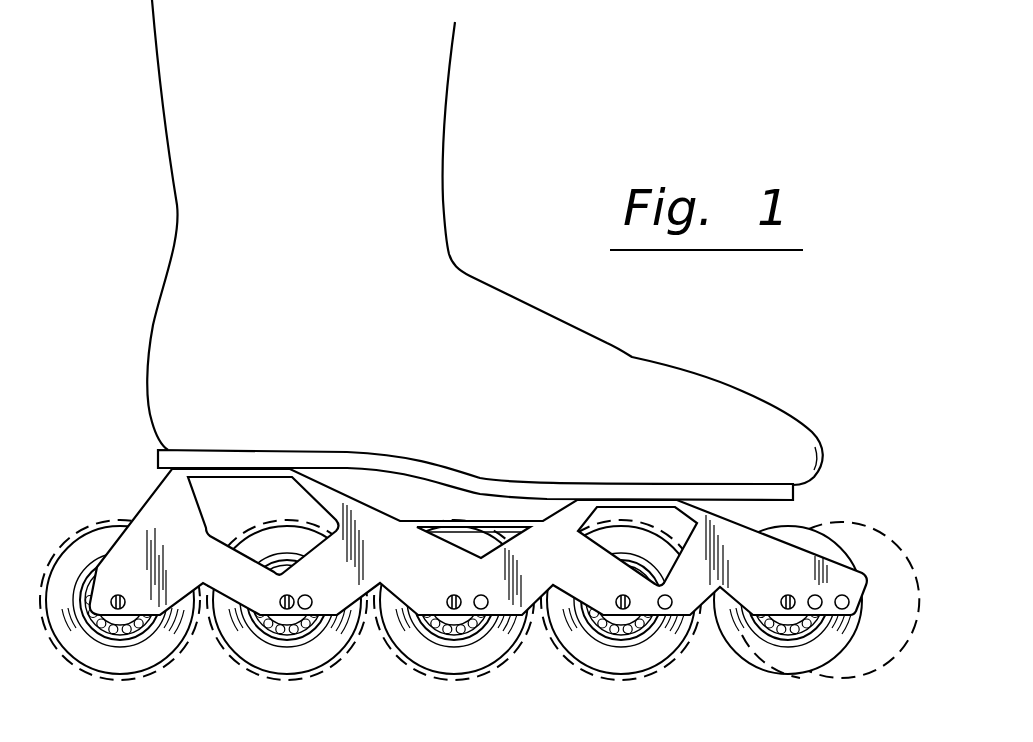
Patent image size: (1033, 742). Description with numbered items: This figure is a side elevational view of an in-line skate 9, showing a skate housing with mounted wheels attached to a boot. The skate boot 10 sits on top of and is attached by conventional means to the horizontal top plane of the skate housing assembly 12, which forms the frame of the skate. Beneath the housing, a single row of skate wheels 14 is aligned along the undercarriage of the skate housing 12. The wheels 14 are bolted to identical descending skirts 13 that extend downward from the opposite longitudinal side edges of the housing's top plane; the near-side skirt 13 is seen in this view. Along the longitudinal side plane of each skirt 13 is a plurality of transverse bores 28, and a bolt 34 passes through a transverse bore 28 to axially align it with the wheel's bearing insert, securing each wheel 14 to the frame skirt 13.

The in-line skate 9 is at (479, 366).
The skate boot 10 is at (605, 361).
The skate housing assembly 12 is at (368, 516).
The descending skirt 13 is at (752, 578).
The skate wheels 14 is at (479, 626).
The transverse bore 28 is at (483, 608).
The bolt 34 is at (287, 608).